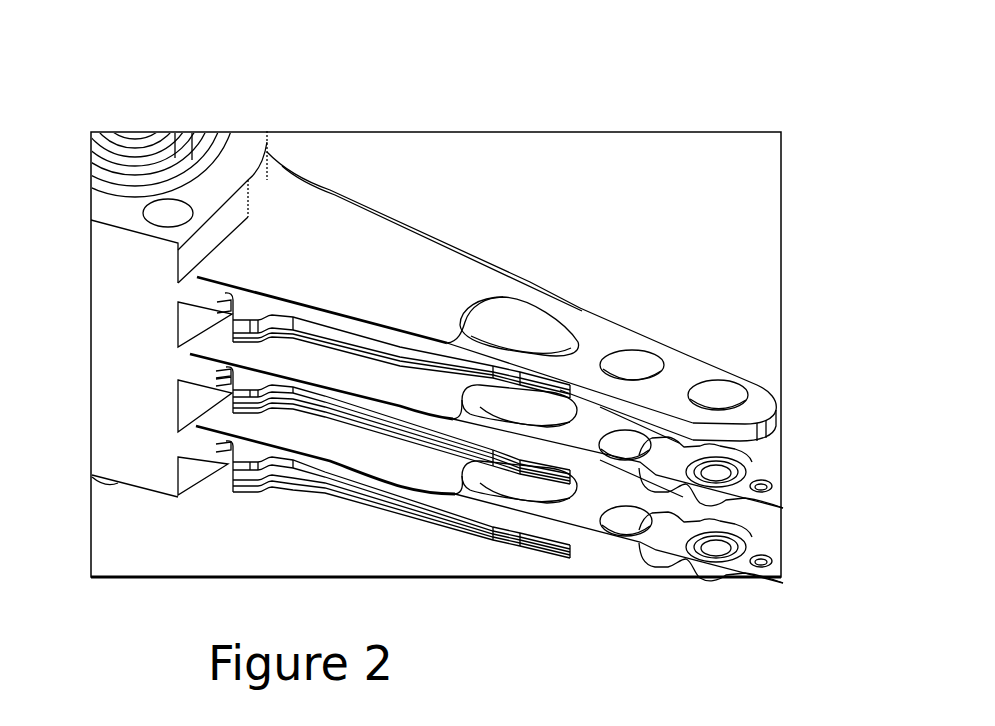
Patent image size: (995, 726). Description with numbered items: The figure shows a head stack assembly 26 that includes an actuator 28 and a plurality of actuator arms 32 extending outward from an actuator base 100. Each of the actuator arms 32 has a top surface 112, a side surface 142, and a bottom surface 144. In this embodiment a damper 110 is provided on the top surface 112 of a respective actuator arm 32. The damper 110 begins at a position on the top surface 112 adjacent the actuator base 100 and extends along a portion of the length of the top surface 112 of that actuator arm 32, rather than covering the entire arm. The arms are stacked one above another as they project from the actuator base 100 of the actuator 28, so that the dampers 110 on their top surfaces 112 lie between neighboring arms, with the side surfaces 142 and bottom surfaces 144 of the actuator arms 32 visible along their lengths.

The head stack assembly 26 is at (238, 108).
The actuator 28 is at (133, 303).
The actuator arms 32 is at (592, 310).
The actuator base 100 is at (243, 201).
The damper 110 is at (427, 278).
The top surface 112 is at (613, 340).
The side surface 142 is at (647, 420).
The bottom surface 144 is at (597, 422).